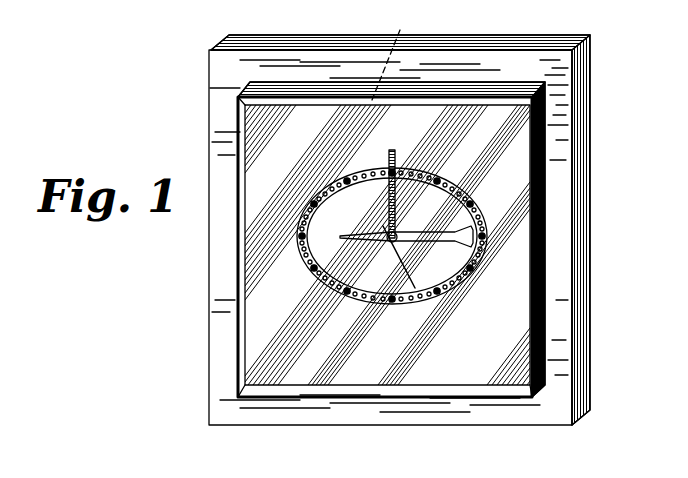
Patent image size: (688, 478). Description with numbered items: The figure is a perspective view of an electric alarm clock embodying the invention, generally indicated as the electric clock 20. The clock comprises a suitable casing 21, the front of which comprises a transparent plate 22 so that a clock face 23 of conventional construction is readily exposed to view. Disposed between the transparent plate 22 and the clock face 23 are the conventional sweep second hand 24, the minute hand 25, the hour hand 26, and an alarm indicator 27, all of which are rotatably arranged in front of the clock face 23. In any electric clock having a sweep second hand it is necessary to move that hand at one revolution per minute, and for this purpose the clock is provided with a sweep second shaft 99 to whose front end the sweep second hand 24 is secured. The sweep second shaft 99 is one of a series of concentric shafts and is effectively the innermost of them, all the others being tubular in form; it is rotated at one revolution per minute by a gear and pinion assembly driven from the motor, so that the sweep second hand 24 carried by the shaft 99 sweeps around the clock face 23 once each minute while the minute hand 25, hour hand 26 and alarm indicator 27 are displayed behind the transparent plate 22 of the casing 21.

The electric clock 20 is at (429, 216).
The casing 21 is at (542, 40).
The transparent plate 22 is at (518, 333).
The clock face 23 is at (389, 53).
The sweep second hand 24 is at (346, 212).
The minute hand 25 is at (389, 194).
The hour hand 26 is at (410, 211).
The alarm indicator 27 is at (412, 273).
The sweep second shaft 99 is at (385, 247).